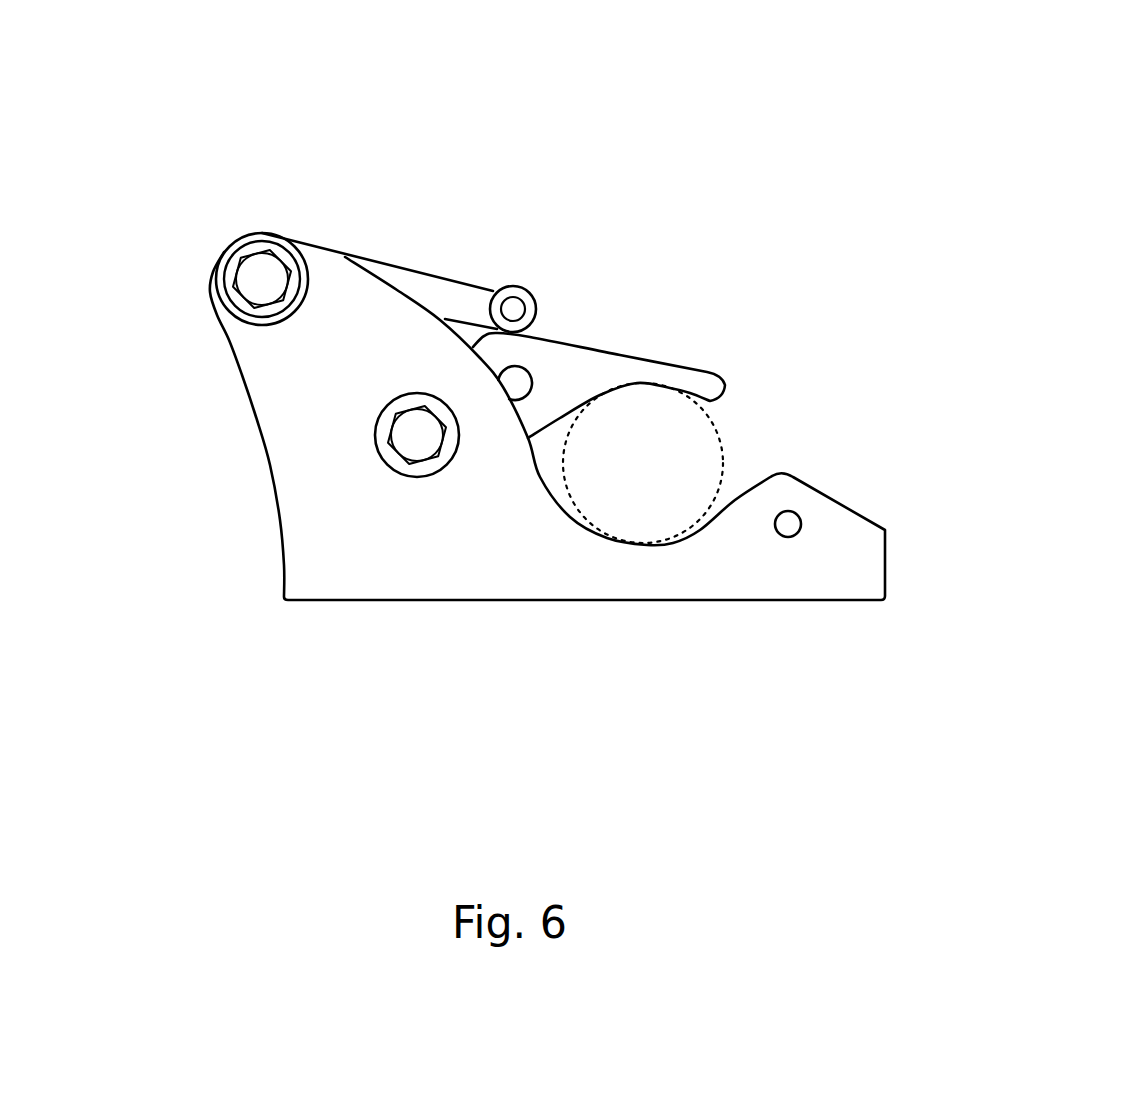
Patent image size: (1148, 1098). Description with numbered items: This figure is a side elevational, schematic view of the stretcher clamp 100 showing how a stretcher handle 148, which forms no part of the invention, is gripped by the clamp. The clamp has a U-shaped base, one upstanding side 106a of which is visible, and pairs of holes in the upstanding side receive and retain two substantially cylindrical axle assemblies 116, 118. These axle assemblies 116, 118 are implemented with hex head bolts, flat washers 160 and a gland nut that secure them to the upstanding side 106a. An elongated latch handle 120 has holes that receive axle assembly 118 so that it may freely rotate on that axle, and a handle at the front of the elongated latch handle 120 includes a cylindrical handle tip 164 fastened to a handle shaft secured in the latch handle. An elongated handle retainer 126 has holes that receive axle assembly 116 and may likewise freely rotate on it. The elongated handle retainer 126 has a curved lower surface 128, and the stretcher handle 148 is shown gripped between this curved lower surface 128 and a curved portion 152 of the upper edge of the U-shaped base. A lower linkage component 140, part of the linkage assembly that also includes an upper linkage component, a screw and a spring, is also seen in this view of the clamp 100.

The stretcher clamp 100 is at (772, 102).
The upstanding side 106a is at (450, 513).
The axle assembly 116 is at (405, 437).
The axle assembly 118 is at (260, 282).
The elongated latch handle 120 is at (456, 279).
The elongated handle retainer 126 is at (643, 360).
The curved lower surface 128 is at (666, 398).
The lower linkage component 140 is at (513, 385).
The stretcher handle 148 is at (658, 462).
The curved portion 152 is at (664, 526).
The flat washer 160 is at (223, 264).
The cylindrical handle tip 164 is at (513, 309).